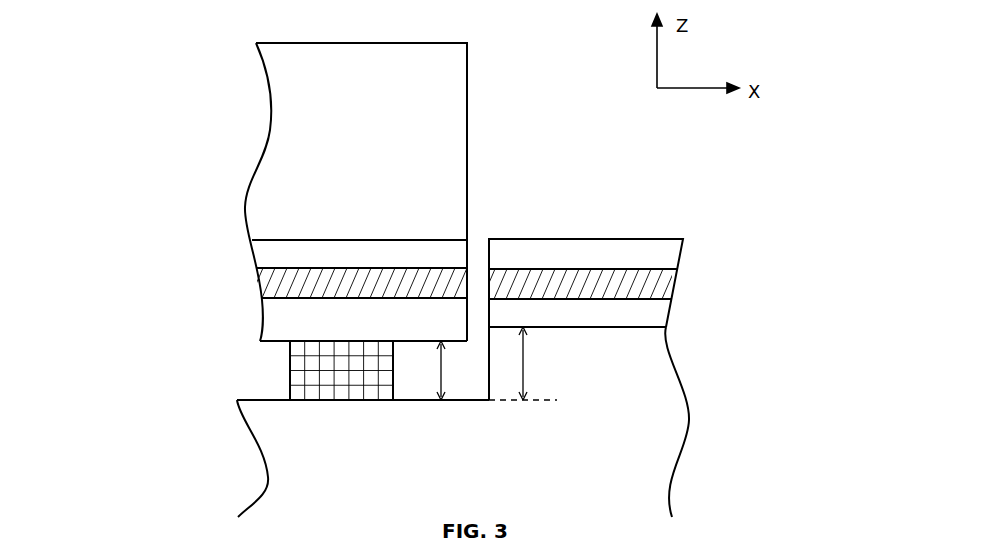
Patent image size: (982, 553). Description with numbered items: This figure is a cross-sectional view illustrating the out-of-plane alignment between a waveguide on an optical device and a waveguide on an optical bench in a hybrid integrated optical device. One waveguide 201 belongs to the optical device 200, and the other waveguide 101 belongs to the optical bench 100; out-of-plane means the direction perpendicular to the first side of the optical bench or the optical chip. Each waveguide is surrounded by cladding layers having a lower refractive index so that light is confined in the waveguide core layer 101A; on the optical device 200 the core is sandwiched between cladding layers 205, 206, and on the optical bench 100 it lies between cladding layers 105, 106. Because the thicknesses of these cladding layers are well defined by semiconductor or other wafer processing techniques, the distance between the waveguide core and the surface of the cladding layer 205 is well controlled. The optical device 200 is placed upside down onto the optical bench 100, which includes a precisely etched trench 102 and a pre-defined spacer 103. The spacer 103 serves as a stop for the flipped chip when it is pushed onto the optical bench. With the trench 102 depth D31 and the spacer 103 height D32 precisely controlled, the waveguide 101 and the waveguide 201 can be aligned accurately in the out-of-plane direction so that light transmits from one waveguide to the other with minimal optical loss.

The optical bench 100 is at (607, 451).
The waveguide 101 is at (659, 260).
The waveguide core layer 101A is at (262, 272).
The trench 102 is at (282, 395).
The spacer 103 is at (343, 360).
The cladding layer 105 is at (543, 243).
The cladding layer 106 is at (590, 312).
The optical device 200 is at (480, 130).
The waveguide 201 is at (389, 249).
The cladding layer 205 is at (297, 310).
The cladding layer 206 is at (285, 253).
The trench depth D31 is at (530, 363).
The spacer height D32 is at (423, 370).